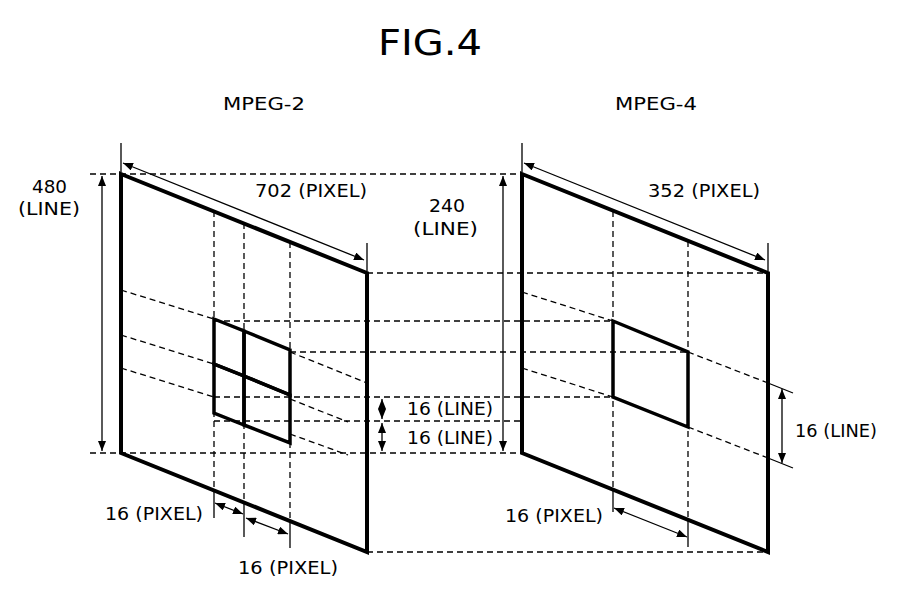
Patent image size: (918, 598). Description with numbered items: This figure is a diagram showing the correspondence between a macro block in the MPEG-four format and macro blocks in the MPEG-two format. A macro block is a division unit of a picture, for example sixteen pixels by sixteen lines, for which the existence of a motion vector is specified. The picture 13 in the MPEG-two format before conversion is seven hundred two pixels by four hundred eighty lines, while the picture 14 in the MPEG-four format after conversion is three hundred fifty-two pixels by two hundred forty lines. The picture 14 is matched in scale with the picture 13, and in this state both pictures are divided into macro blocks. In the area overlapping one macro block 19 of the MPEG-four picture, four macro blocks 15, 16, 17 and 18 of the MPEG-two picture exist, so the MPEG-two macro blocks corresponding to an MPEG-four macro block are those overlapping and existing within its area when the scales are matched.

The picture in the MPEG-2 format 13 is at (168, 190).
The picture in the MPEG-4 format 14 is at (585, 192).
The macro block 15 is at (232, 325).
The macro block 16 is at (268, 340).
The macro block 17 is at (228, 420).
The macro block 18 is at (265, 434).
The macro block 19 is at (666, 343).